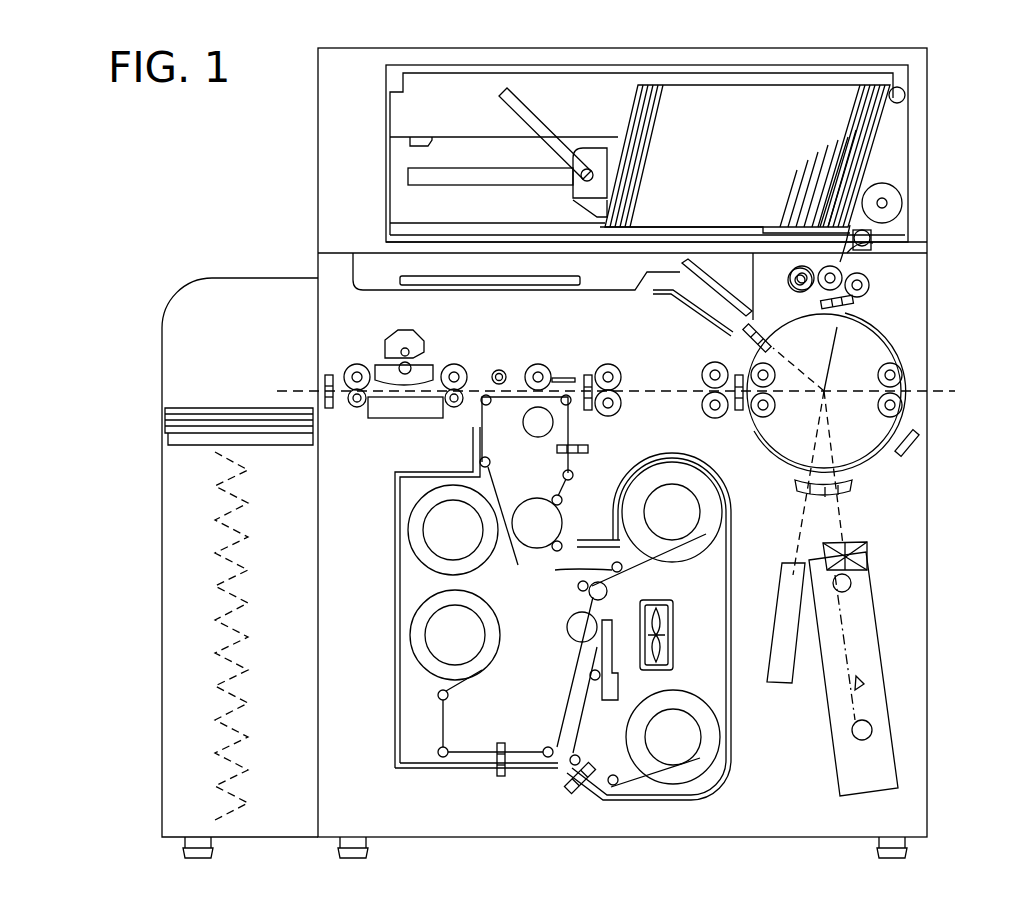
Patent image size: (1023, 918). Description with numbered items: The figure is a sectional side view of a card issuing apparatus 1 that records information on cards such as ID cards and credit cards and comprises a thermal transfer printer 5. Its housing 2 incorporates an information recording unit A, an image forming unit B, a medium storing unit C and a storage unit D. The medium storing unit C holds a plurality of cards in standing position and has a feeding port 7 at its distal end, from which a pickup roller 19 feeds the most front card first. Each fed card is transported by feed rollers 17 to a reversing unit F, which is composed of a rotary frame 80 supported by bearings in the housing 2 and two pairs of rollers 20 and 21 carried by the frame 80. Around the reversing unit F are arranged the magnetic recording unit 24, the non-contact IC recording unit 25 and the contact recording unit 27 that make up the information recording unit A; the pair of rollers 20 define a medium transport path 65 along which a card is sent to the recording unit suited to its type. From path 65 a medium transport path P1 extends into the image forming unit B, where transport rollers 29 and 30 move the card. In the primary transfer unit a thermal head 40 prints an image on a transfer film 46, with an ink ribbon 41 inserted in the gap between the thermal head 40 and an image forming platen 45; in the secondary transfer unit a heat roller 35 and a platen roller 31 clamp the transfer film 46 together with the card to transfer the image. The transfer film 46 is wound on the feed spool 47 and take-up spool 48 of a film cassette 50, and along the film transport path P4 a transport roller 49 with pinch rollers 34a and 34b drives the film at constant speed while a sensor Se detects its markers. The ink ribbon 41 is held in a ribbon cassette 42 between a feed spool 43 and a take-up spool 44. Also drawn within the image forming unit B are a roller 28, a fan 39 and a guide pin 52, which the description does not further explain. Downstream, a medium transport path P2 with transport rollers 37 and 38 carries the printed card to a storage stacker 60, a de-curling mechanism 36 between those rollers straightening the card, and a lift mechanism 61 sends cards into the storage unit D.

The card issuing apparatus 1 is at (303, 260).
The housing 2 is at (930, 553).
The thermal transfer printer 5 is at (552, 800).
The feeding port 7 is at (872, 253).
The feed rollers 17 is at (862, 296).
The pickup roller 19 is at (905, 206).
The rollers 20 is at (905, 370).
The rollers 21 is at (775, 410).
The magnetic recording unit 24 is at (828, 737).
The non-contact IC recording unit 25 is at (740, 300).
The contact recording unit 27 is at (782, 678).
The registration roller 28 is at (608, 590).
The transport roller 29 is at (712, 365).
The transport roller 30 is at (615, 370).
The platen roller 31 is at (545, 368).
The pinch roller 34a is at (555, 500).
The pinch roller 34b is at (560, 545).
The heat roller 35 is at (528, 422).
The de-curling mechanism 36 is at (376, 331).
The transport roller 37 is at (453, 365).
The transport roller 38 is at (350, 370).
The fan 39 is at (670, 623).
The thermal head 40 is at (605, 688).
The ink ribbon 41 is at (582, 722).
The ribbon cassette 42 is at (732, 585).
The feed spool 43 is at (695, 775).
The take-up spool 44 is at (692, 497).
The image forming platen 45 is at (570, 630).
The transfer film 46 is at (437, 733).
The feed spool 47 is at (413, 528).
The take-up spool 48 is at (478, 672).
The transport roller 49 is at (532, 540).
The film cassette 50 is at (395, 595).
The guide pin 52 is at (613, 566).
The storage stacker 60 is at (175, 438).
The lift mechanism 61 is at (228, 610).
The medium transport path 65 is at (850, 396).
The rotary frame 80 is at (872, 322).
The information recording unit A is at (900, 690).
The image forming unit B is at (506, 353).
The medium storing unit C is at (895, 143).
The storage unit D is at (133, 350).
The reversing unit F is at (857, 330).
The medium transport path P1 is at (668, 396).
The medium transport path P2 is at (290, 388).
The film transport path P4 is at (557, 580).
The sensor Se is at (501, 780).